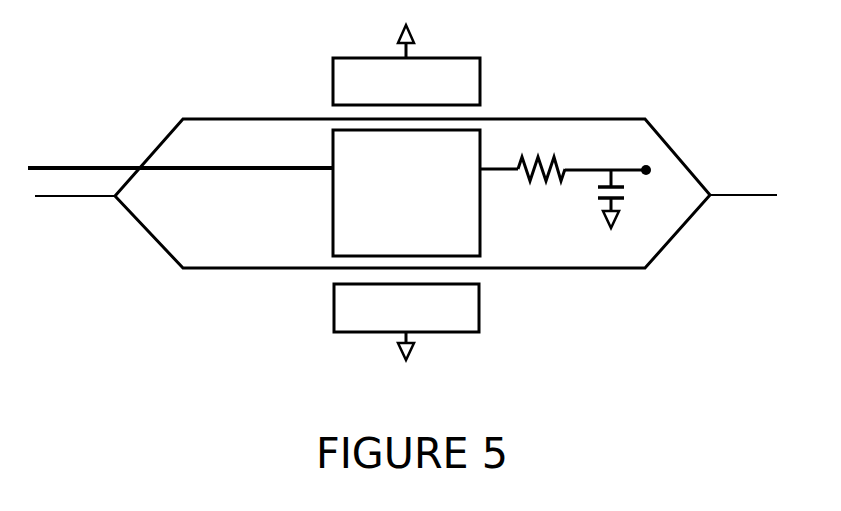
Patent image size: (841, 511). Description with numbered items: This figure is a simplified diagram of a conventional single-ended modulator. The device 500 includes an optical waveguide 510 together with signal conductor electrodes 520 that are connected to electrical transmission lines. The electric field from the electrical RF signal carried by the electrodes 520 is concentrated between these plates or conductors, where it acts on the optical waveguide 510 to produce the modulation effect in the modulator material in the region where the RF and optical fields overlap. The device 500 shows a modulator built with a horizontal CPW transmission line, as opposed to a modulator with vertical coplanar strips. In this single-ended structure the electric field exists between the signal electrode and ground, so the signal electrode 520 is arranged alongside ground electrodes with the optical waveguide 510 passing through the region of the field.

The device 500 is at (121, 86).
The optical waveguide 510 is at (625, 270).
The signal conductor electrodes 520 is at (360, 58).